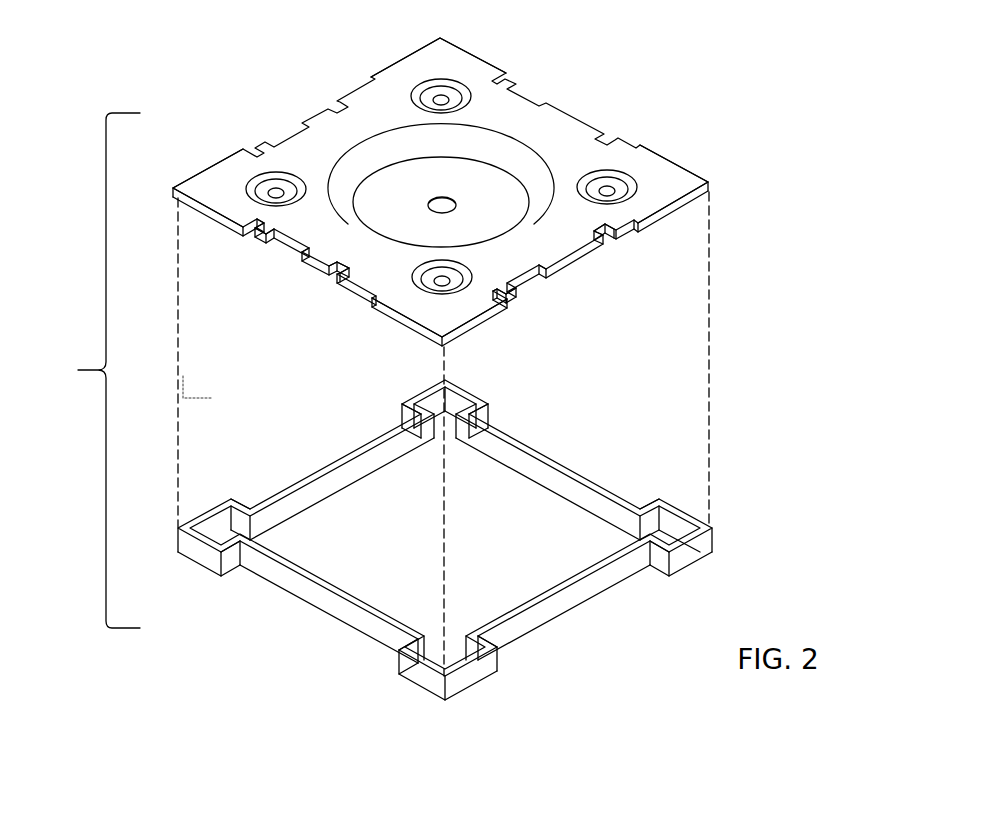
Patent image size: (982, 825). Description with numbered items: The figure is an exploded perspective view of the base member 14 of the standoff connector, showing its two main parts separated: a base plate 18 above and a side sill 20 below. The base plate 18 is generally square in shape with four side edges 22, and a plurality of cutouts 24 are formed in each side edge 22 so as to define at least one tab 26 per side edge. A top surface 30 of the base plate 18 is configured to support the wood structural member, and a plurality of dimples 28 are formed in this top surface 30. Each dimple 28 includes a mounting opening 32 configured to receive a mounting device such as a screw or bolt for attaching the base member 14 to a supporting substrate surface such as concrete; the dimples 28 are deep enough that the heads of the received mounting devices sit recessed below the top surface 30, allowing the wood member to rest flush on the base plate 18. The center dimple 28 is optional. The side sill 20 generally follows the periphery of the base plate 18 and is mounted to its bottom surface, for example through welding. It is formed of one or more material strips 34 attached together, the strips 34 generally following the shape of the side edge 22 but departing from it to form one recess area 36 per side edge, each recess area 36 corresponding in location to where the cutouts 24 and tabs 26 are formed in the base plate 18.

The base member 14 is at (364, 394).
The base plate 18 is at (664, 152).
The side sill 20 is at (503, 545).
The side edge 22 is at (210, 168).
The cutout 24 is at (312, 263).
The tab 26 is at (352, 277).
The dimple 28 is at (428, 97).
The top surface 30 is at (662, 178).
The mounting opening 32 is at (455, 96).
The material strip 34 is at (263, 566).
The recess area 36 is at (551, 447).